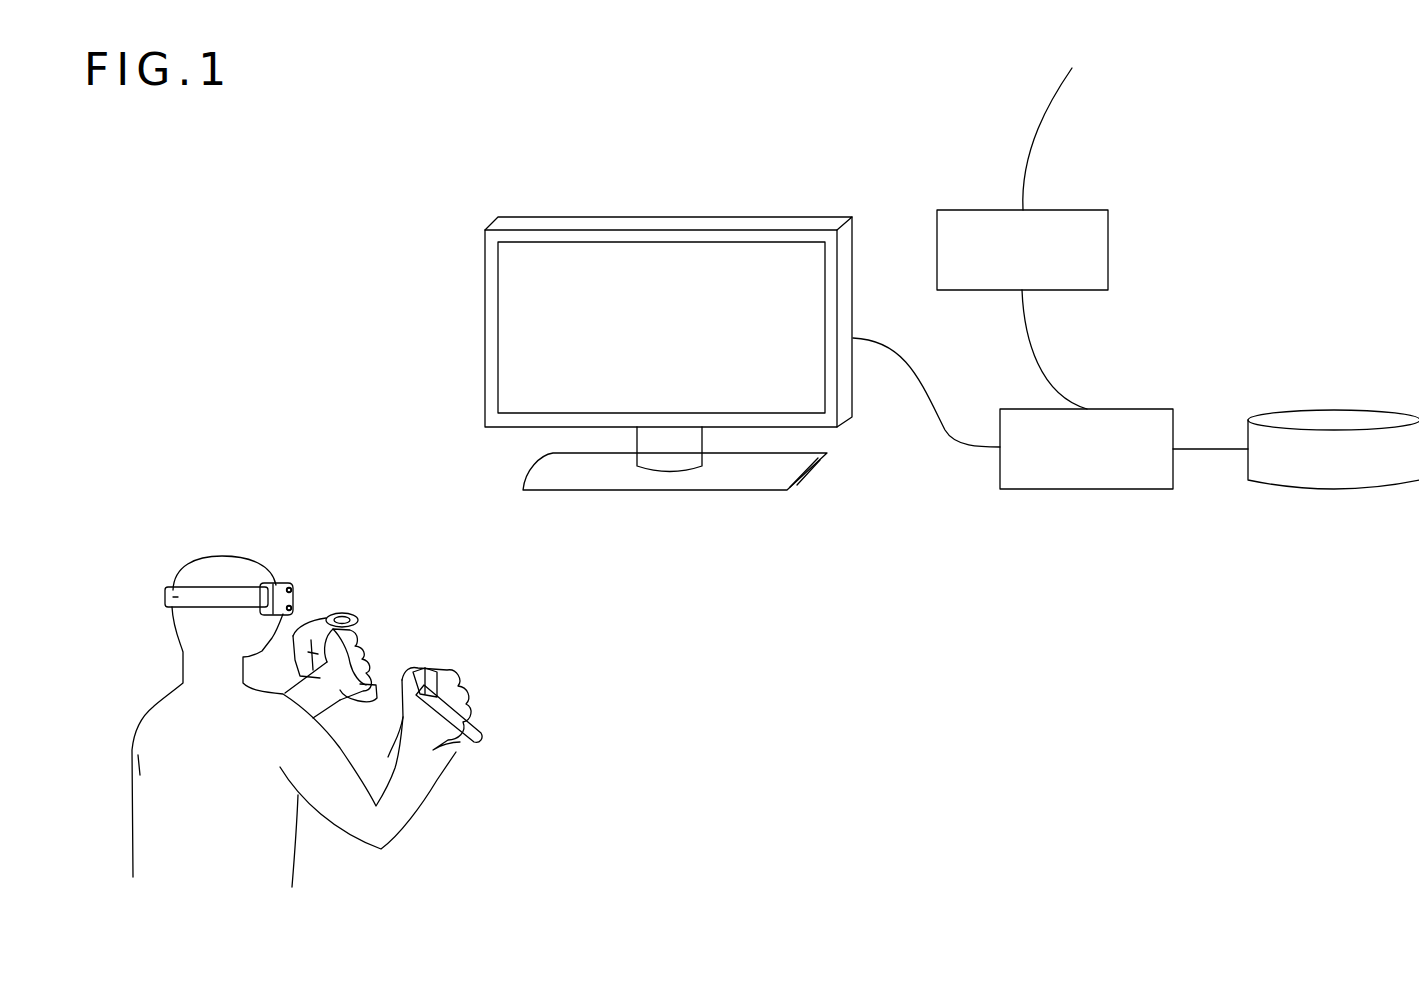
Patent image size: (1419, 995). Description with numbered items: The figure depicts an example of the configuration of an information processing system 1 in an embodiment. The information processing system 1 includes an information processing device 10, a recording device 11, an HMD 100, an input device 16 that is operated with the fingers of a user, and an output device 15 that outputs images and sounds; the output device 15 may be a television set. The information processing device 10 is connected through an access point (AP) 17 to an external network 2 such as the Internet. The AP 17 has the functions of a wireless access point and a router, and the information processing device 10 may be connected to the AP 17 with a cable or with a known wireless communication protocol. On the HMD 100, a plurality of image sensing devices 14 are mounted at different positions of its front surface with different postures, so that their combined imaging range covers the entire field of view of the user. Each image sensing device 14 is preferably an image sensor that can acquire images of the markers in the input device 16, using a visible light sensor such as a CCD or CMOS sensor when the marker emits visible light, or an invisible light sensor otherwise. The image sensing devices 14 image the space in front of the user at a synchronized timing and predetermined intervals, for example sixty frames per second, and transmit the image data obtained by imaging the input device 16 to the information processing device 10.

The information processing system 1 is at (758, 959).
The external network 2 is at (1053, 127).
The information processing device 10 is at (1142, 409).
The recording device 11 is at (1378, 420).
The image sensing device 14 is at (288, 585).
The output device 15 is at (485, 328).
The input device 16 is at (343, 615).
The access point 17 is at (1078, 208).
The HMD 100 is at (168, 598).